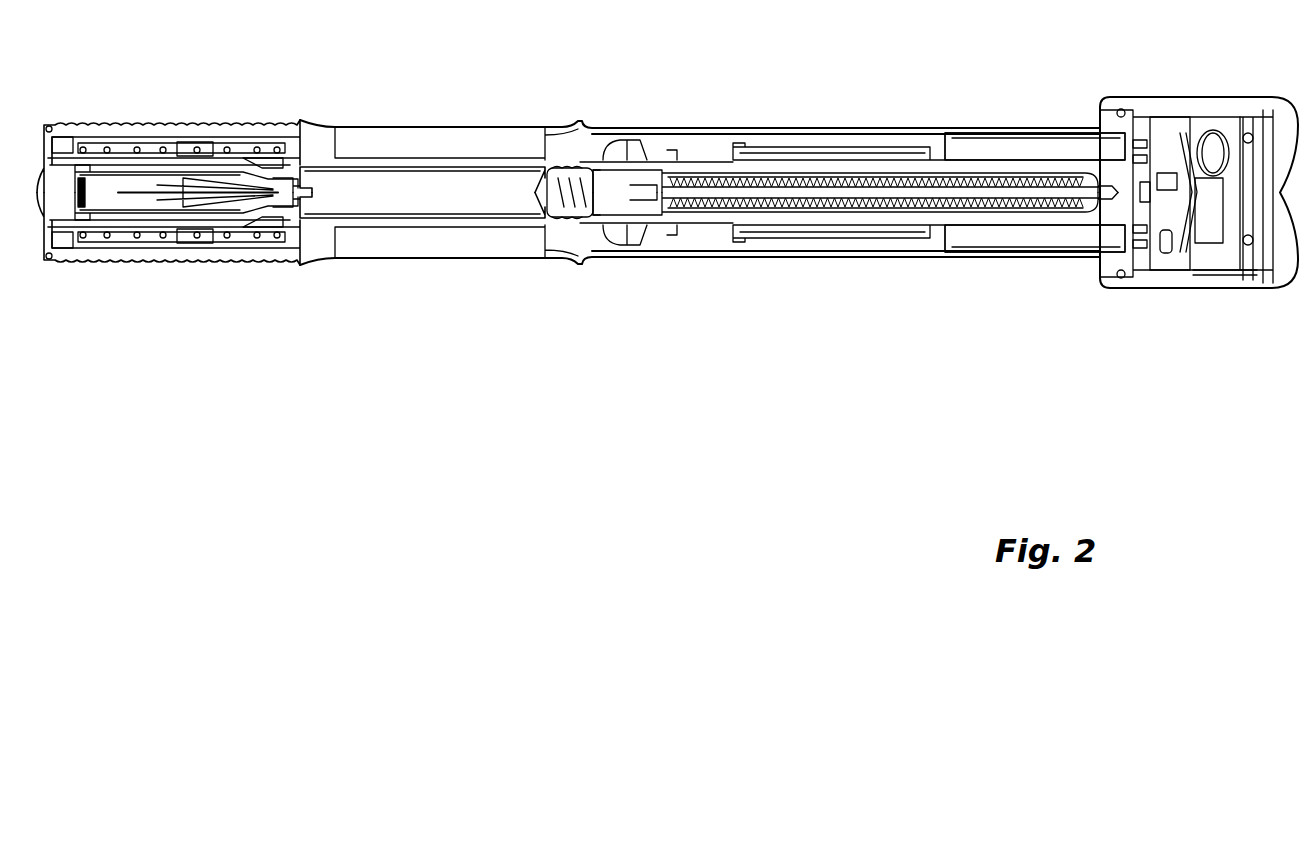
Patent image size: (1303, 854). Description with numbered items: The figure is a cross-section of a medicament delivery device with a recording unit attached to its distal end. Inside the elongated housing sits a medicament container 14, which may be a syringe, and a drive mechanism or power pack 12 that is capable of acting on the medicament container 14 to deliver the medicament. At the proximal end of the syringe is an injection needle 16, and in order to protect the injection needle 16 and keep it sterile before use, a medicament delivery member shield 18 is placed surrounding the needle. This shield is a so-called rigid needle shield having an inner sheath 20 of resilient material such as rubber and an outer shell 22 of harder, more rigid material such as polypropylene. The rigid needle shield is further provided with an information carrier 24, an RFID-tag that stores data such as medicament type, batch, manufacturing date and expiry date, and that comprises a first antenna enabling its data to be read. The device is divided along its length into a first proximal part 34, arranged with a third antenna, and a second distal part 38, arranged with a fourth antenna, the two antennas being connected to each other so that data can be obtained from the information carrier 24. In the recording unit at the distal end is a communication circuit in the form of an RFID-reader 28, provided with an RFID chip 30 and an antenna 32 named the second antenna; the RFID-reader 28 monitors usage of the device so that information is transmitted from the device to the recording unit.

The power pack 12 is at (854, 108).
The medicament container 14 is at (467, 207).
The injection needle 16 is at (118, 193).
The medicament delivery member shield 18 is at (116, 158).
The inner sheath 20 is at (182, 207).
The outer shell 22 is at (148, 158).
The information carrier 24 is at (73, 207).
The RFID-reader 28 is at (1233, 263).
The RFID chip 30 is at (1203, 233).
The antenna 32 is at (1183, 140).
The first proximal part 34 is at (247, 87).
The second distal part 38 is at (1102, 85).